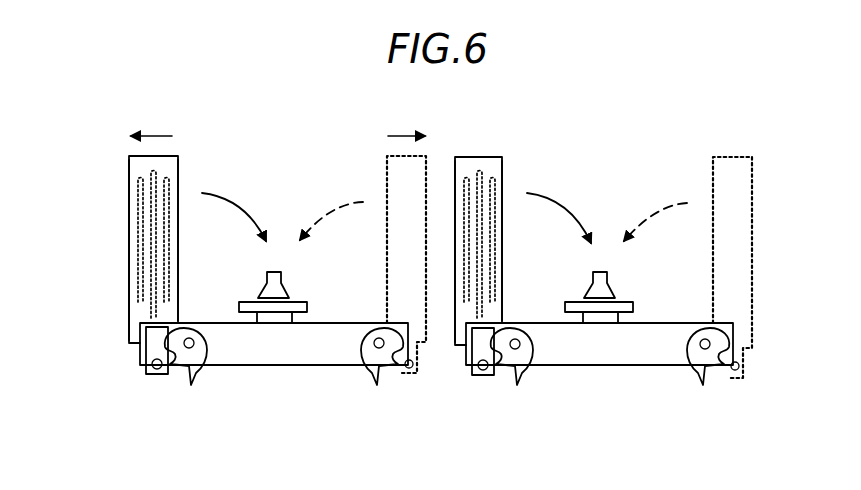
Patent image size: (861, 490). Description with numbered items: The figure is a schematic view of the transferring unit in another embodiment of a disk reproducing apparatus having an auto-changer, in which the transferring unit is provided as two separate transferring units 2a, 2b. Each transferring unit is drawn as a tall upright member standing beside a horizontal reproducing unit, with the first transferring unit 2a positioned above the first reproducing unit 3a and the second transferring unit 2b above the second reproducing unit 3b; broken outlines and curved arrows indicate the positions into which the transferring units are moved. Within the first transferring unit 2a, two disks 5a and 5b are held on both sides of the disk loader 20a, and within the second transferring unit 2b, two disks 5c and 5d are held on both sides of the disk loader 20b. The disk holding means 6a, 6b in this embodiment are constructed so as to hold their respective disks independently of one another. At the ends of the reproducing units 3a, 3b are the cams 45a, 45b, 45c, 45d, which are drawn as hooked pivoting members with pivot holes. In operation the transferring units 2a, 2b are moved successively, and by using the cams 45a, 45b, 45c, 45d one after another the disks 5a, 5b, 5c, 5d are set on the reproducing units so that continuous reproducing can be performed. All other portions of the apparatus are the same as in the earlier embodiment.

The transferring unit 2a is at (128, 163).
The transferring unit 2b is at (502, 162).
The reproducing unit 3a is at (322, 365).
The reproducing unit 3b is at (643, 365).
The disk 5a is at (140, 275).
The disk 5b is at (173, 186).
The disk 5c is at (466, 257).
The disk 5d is at (495, 250).
The disk holding means 6a is at (152, 170).
The disk holding means 6b is at (478, 170).
The disk loader 20a is at (150, 221).
The disk loader 20b is at (482, 208).
The cam 45a is at (373, 377).
The cam 45b is at (188, 377).
The cam 45c is at (700, 380).
The cam 45d is at (512, 377).